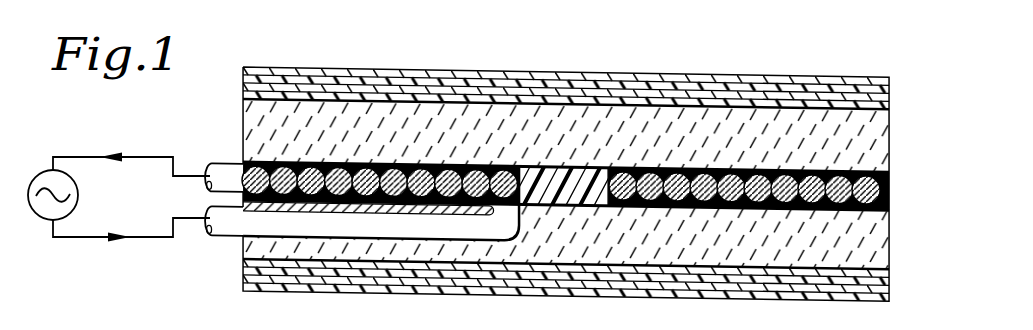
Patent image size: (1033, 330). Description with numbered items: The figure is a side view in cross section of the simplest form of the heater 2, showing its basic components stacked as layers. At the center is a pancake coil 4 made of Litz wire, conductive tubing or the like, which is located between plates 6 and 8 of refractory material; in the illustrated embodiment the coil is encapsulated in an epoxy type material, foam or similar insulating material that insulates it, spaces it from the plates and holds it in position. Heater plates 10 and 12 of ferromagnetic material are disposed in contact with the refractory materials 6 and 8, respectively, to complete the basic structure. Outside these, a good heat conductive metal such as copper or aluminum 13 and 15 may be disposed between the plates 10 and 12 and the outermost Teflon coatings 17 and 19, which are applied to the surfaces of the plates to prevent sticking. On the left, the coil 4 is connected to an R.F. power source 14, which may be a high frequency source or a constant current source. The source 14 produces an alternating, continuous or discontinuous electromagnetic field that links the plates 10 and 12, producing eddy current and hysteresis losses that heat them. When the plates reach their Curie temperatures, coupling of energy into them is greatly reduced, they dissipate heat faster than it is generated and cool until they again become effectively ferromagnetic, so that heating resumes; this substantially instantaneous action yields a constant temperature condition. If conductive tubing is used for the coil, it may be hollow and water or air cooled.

The heater 2 is at (532, 52).
The pancake coil 4 is at (738, 180).
The plate of refractory material 6 is at (679, 107).
The plate of refractory material 8 is at (682, 252).
The heater plate 10 is at (432, 73).
The heater plate 12 is at (420, 272).
The heat conductive metal 13 is at (373, 69).
The R.F. power source 14 is at (50, 171).
The heat conductive metal 15 is at (477, 280).
The Teflon coating 17 is at (317, 67).
The Teflon coating 19 is at (555, 292).